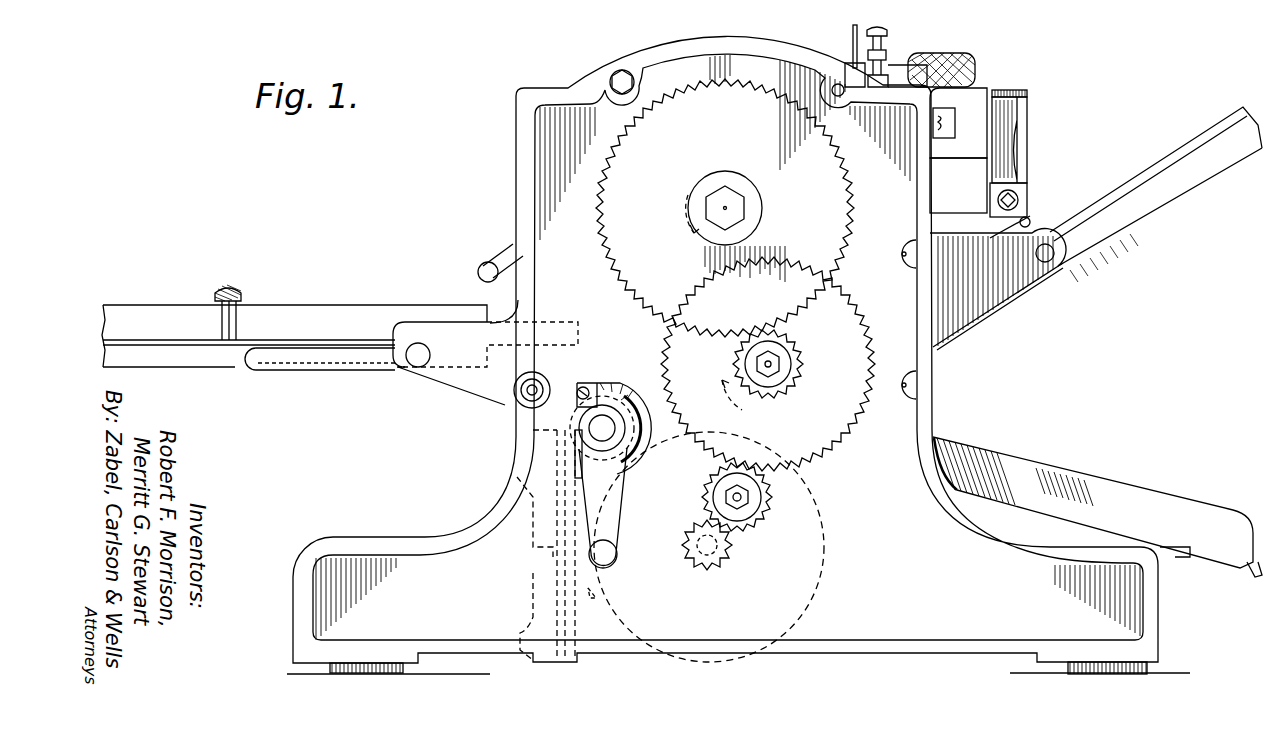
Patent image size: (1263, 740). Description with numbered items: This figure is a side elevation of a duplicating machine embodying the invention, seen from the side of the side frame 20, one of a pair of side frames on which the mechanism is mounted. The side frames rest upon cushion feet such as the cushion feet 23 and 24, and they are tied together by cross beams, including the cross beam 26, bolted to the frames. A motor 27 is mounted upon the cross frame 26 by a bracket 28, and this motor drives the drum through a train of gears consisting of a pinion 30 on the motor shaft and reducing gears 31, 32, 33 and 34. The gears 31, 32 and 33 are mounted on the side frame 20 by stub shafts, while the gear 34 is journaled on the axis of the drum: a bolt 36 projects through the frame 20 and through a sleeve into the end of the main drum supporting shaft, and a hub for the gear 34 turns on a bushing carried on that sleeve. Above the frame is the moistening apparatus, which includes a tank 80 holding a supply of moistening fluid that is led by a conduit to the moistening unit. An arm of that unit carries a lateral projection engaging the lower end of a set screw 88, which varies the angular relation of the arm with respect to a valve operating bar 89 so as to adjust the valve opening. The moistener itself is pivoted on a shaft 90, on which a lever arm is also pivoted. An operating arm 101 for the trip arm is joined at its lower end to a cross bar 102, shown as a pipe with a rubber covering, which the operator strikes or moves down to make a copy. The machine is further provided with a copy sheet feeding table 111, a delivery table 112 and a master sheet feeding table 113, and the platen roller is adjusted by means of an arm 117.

The side frame 20 is at (568, 88).
The cushion foot 23 is at (385, 668).
The cushion foot 24 is at (1087, 668).
The cross beam 26 is at (545, 575).
The motor 27 is at (824, 568).
The bracket 28 is at (605, 591).
The pinion 30 is at (725, 560).
The reducing gear 31 is at (760, 516).
The reducing gear 32 is at (828, 452).
The reducing gear 33 is at (790, 382).
The reducing gear 34 is at (711, 208).
The bolt 36 is at (712, 200).
The tank 80 is at (980, 98).
The set screw 88 is at (887, 60).
The valve operating bar 89 is at (948, 56).
The shaft 90 is at (521, 400).
The operating arm 101 is at (505, 252).
The cross bar 102 is at (478, 270).
The copy sheet feeding table 111 is at (210, 357).
The delivery table 112 is at (1117, 497).
The master sheet feeding table 113 is at (1152, 192).
The arm 117 is at (610, 512).